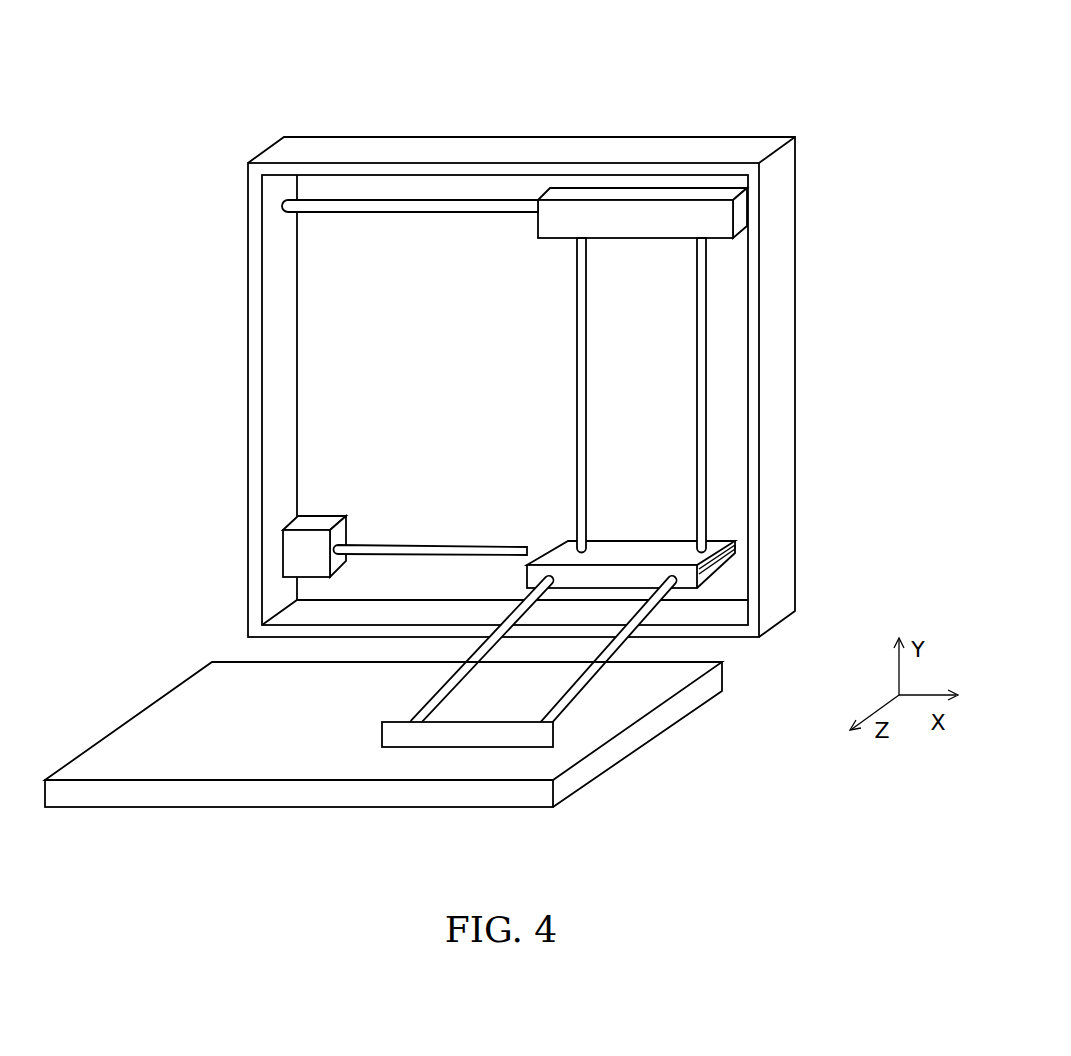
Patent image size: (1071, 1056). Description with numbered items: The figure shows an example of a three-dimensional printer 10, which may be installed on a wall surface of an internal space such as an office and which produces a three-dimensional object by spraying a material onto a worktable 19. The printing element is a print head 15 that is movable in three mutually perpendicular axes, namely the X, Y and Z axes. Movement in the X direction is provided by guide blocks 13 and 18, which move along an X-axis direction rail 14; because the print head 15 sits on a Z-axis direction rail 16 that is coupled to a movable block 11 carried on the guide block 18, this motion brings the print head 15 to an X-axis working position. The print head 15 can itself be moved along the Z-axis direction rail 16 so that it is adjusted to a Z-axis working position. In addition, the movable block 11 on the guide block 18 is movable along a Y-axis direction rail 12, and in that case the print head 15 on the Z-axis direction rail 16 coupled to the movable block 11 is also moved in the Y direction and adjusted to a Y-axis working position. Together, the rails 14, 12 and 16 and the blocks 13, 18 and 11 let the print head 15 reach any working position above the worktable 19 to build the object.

The 3D printer 10 is at (814, 87).
The movable block 11 is at (568, 545).
The Y-axis direction rail 12 is at (581, 302).
The guide block 13 is at (655, 188).
The X-axis direction rail 14 is at (434, 212).
The print head 15 is at (693, 588).
The Z-axis direction rail 16 is at (480, 653).
The guide block 18 is at (733, 553).
The worktable 19 is at (353, 795).